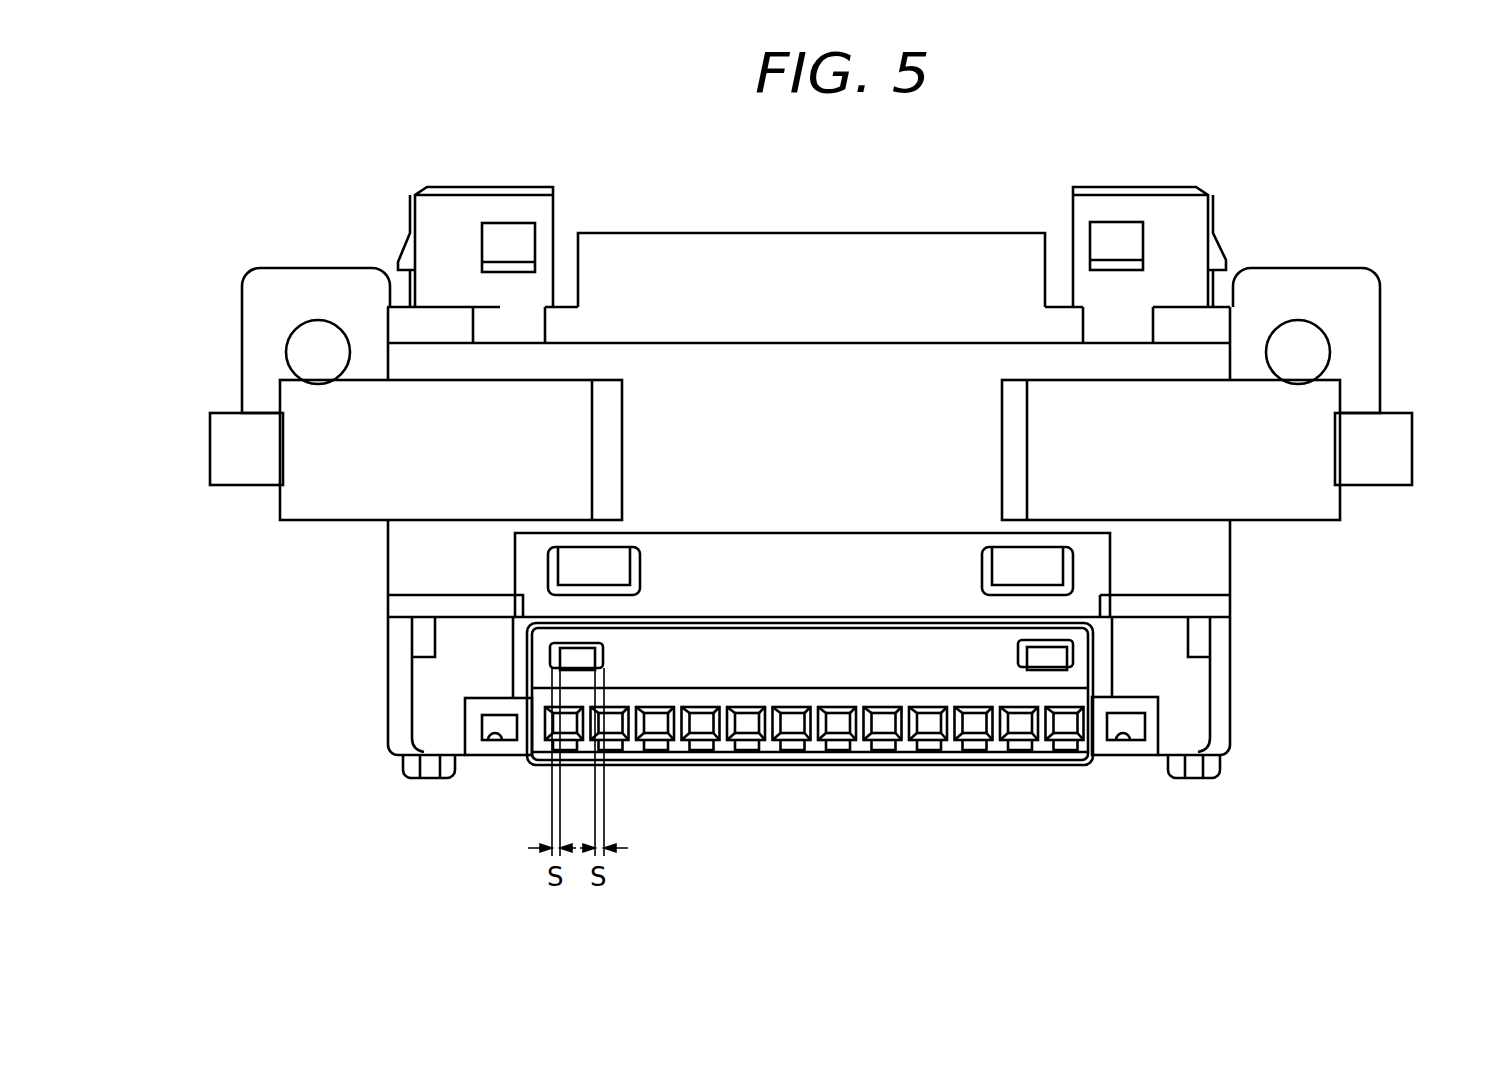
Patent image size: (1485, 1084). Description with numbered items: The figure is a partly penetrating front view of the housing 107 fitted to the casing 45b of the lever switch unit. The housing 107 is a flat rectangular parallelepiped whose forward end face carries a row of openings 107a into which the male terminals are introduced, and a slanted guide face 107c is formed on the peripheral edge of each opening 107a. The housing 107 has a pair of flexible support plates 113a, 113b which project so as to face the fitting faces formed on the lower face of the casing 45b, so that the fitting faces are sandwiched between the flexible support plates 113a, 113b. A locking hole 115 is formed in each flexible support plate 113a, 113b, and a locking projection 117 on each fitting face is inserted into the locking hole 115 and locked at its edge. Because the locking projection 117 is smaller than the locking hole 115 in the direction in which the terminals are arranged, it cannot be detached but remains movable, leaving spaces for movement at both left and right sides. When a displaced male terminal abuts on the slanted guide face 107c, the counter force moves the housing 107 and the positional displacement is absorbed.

The casing 45b is at (1244, 578).
The flexible support plate 113a is at (840, 635).
The flexible support plate 113b is at (399, 748).
The locking hole 115 is at (492, 733).
The locking projection 117 is at (570, 652).
The housing 107 is at (810, 747).
The opening 107a is at (746, 725).
The slanted guide face 107c is at (870, 722).